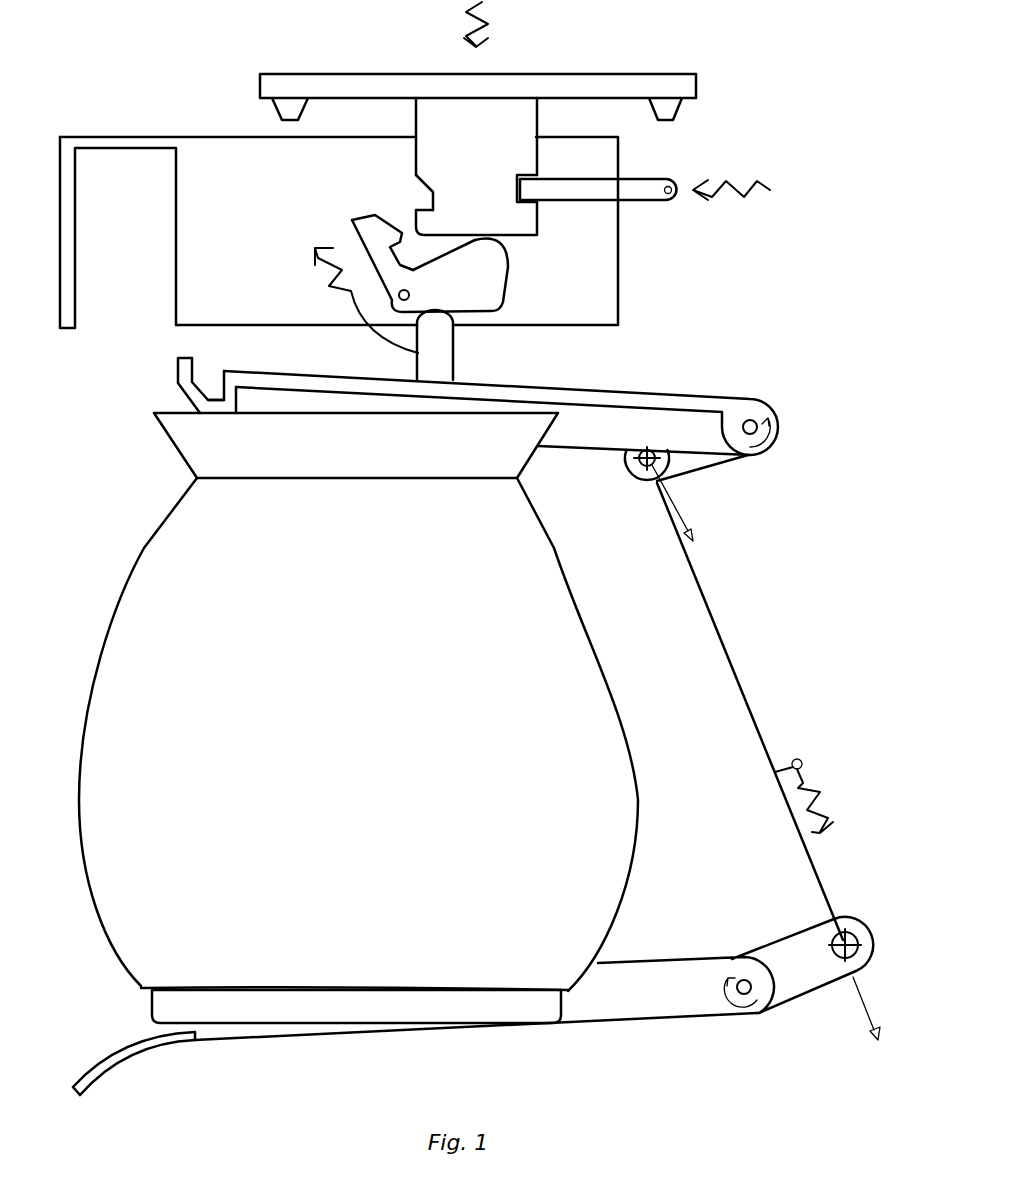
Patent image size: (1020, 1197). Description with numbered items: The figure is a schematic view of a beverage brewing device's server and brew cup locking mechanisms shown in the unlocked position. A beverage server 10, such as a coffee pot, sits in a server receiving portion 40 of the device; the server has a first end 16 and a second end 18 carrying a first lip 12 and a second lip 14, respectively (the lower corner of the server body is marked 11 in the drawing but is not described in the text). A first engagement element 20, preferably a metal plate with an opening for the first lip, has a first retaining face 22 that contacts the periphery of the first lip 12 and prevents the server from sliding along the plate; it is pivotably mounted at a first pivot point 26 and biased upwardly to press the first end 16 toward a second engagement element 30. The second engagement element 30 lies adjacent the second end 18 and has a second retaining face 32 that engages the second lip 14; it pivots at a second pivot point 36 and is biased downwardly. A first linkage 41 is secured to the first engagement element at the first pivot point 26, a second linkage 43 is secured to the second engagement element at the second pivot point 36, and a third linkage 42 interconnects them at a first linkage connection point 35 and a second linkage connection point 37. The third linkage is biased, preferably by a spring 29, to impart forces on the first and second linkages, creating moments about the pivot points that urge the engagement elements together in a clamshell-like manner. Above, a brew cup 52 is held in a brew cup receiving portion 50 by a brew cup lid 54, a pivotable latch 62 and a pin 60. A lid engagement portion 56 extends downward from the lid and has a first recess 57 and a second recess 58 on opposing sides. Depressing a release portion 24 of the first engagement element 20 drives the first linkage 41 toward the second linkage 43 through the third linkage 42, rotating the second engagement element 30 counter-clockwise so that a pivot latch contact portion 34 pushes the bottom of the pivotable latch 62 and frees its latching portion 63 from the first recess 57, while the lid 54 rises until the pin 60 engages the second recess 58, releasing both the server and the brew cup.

The beverage server 10 is at (132, 522).
The bottom edge of container 11 is at (134, 995).
The first lip 12 is at (415, 1018).
The second lip 14 is at (425, 464).
The first end 16 is at (316, 1038).
The second end 18 is at (165, 407).
The first engagement element 20 is at (178, 1044).
The first retaining face 22 is at (214, 1038).
The release portion 24 is at (88, 1083).
The first pivot point 26 is at (745, 977).
The spring 29 is at (813, 790).
The second engagement element 30 is at (628, 398).
The second retaining face 32 is at (252, 402).
The pivot latch contact portion 34 is at (440, 348).
The first linkage connection point 35 is at (836, 933).
The second pivot point 36 is at (744, 410).
The second linkage connection point 37 is at (628, 458).
The server receiving portion 40 is at (650, 652).
The first linkage 41 is at (793, 992).
The third linkage 42 is at (742, 688).
The second linkage 43 is at (703, 467).
The brew cup receiving portion 50 is at (640, 298).
The brew cup 52 is at (220, 246).
The brew cup lid 54 is at (333, 82).
The lid engagement portion 56 is at (465, 154).
The first recess 57 is at (420, 198).
The second recess 58 is at (515, 183).
The pin 60 is at (635, 195).
The pivotable latch 62 is at (452, 296).
The latching portion 63 is at (376, 222).